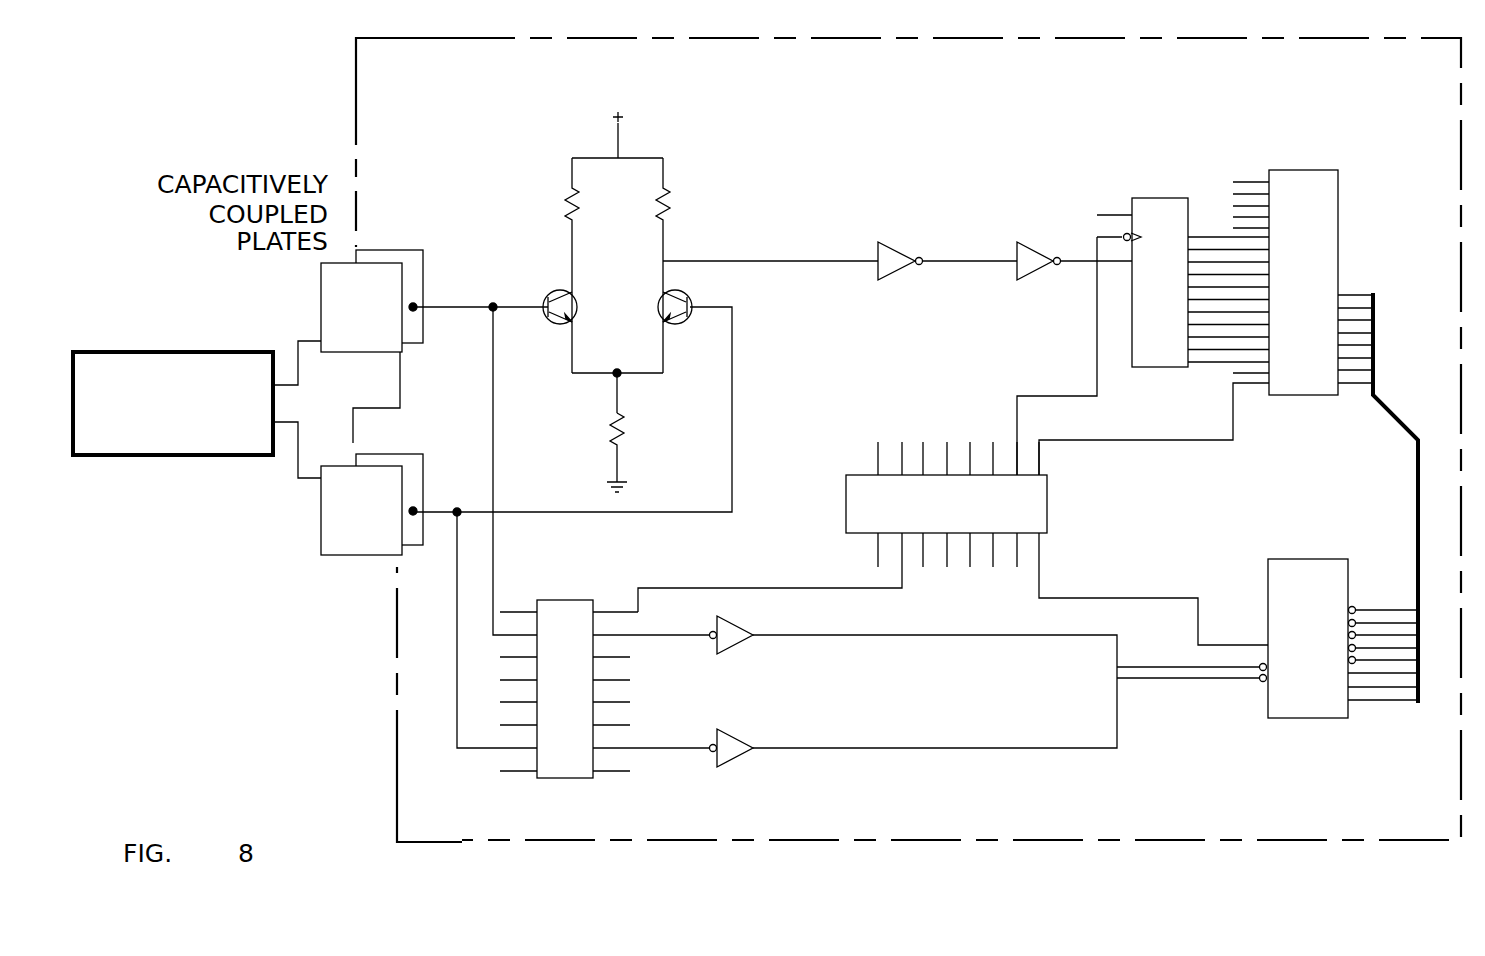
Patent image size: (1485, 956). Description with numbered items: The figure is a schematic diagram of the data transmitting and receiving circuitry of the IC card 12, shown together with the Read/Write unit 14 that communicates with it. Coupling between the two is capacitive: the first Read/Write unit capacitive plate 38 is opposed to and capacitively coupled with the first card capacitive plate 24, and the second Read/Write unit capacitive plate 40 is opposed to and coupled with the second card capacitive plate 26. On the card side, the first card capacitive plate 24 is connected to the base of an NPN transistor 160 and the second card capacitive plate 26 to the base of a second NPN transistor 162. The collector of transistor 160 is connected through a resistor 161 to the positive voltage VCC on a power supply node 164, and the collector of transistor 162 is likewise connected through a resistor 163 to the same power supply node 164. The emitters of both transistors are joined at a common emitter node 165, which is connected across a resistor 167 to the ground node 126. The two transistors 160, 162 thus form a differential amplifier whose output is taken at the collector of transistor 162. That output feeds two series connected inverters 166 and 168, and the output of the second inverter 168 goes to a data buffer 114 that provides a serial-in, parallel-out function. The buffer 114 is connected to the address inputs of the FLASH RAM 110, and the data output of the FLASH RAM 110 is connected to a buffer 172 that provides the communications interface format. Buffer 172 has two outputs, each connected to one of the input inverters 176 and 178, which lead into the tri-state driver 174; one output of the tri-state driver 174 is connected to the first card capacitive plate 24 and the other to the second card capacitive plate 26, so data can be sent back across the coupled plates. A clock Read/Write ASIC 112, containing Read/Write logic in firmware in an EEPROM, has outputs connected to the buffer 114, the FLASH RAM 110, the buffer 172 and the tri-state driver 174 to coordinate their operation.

The IC card 12 is at (352, 73).
The Read/Write unit 14 is at (193, 460).
The first card capacitive plate 24 is at (393, 248).
The second card capacitive plate 26 is at (388, 450).
The first Read/Write unit capacitive plate 38 is at (318, 310).
The second Read/Write unit capacitive plate 40 is at (332, 570).
The FLASH RAM 110 is at (1303, 160).
The clock Read/Write ASIC 112 is at (1058, 488).
The data buffer 114 is at (1150, 190).
The ground node 126 is at (632, 490).
The NPN transistor 160 is at (556, 330).
The resistor 161 is at (562, 203).
The second NPN transistor 162 is at (693, 283).
The resistor 163 is at (685, 213).
The power supply node 164 is at (613, 117).
The common emitter node 165 is at (612, 387).
The inverter 166 is at (888, 238).
The resistor 167 is at (630, 437).
The second inverter 168 is at (1033, 278).
The buffer 172 is at (1327, 557).
The tri-state driver 174 is at (553, 597).
The inverter 176 is at (757, 770).
The inverter 178 is at (760, 658).